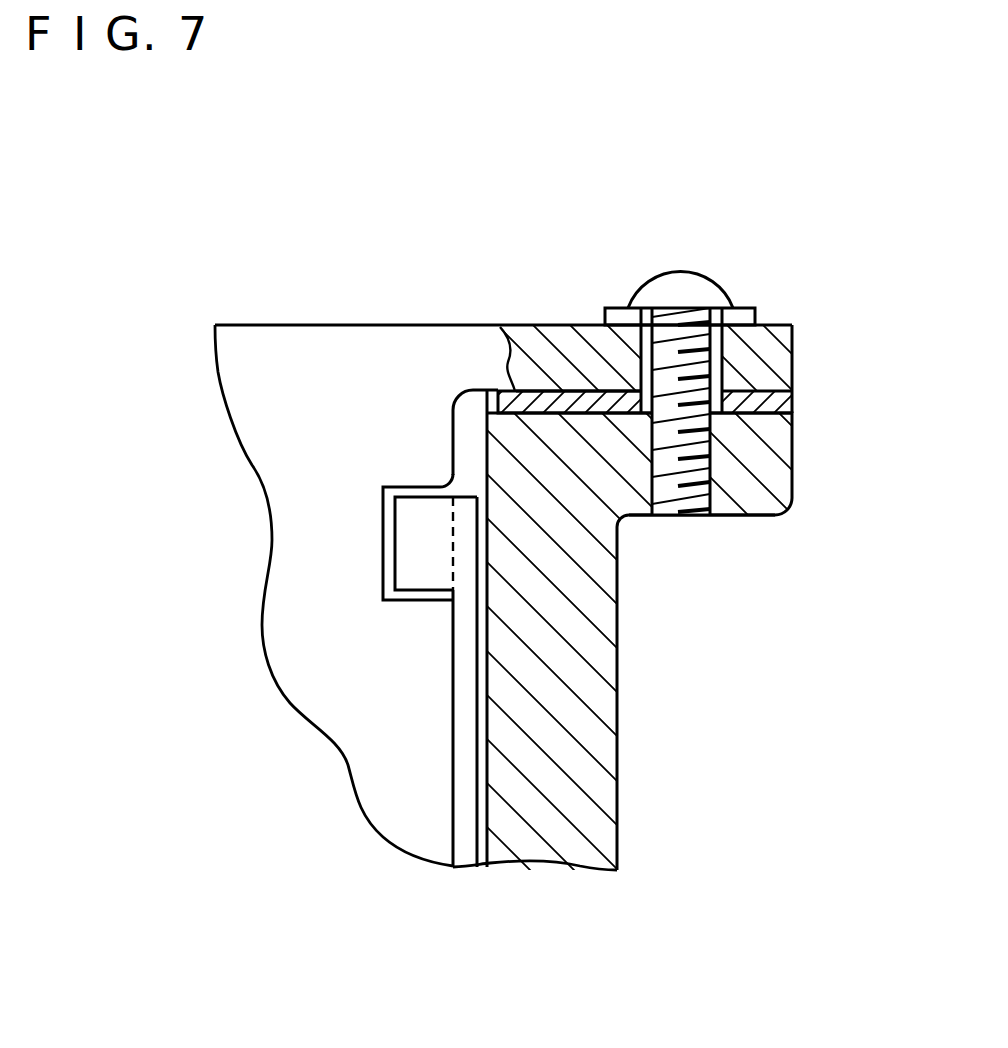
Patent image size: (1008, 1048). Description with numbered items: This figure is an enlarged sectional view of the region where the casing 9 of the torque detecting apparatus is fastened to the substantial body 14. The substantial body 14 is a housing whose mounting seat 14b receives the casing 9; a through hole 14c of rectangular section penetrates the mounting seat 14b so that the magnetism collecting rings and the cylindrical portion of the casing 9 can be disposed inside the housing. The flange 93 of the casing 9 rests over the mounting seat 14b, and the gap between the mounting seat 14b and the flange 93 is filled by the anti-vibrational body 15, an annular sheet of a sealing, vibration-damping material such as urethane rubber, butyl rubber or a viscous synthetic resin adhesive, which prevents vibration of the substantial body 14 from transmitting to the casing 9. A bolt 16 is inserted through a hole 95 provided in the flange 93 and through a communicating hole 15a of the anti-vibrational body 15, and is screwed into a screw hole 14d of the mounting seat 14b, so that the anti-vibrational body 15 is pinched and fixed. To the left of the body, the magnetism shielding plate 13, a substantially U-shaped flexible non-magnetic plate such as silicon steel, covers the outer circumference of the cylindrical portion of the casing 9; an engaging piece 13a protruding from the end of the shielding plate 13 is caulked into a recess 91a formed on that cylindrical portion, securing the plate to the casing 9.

The casing 9 is at (185, 412).
The flange 93 is at (777, 322).
The hole 95 is at (660, 318).
The bolt 16 is at (708, 275).
The anti-vibrational body 15 is at (765, 383).
The communicating hole 15a is at (706, 410).
The substantial body 14 is at (632, 665).
The mounting seat 14b is at (576, 412).
The through hole 14c is at (487, 452).
The screw hole 14d is at (693, 518).
The magnetism shielding plate 13 is at (477, 773).
The engaging piece 13a is at (408, 548).
The recess 91a is at (417, 590).